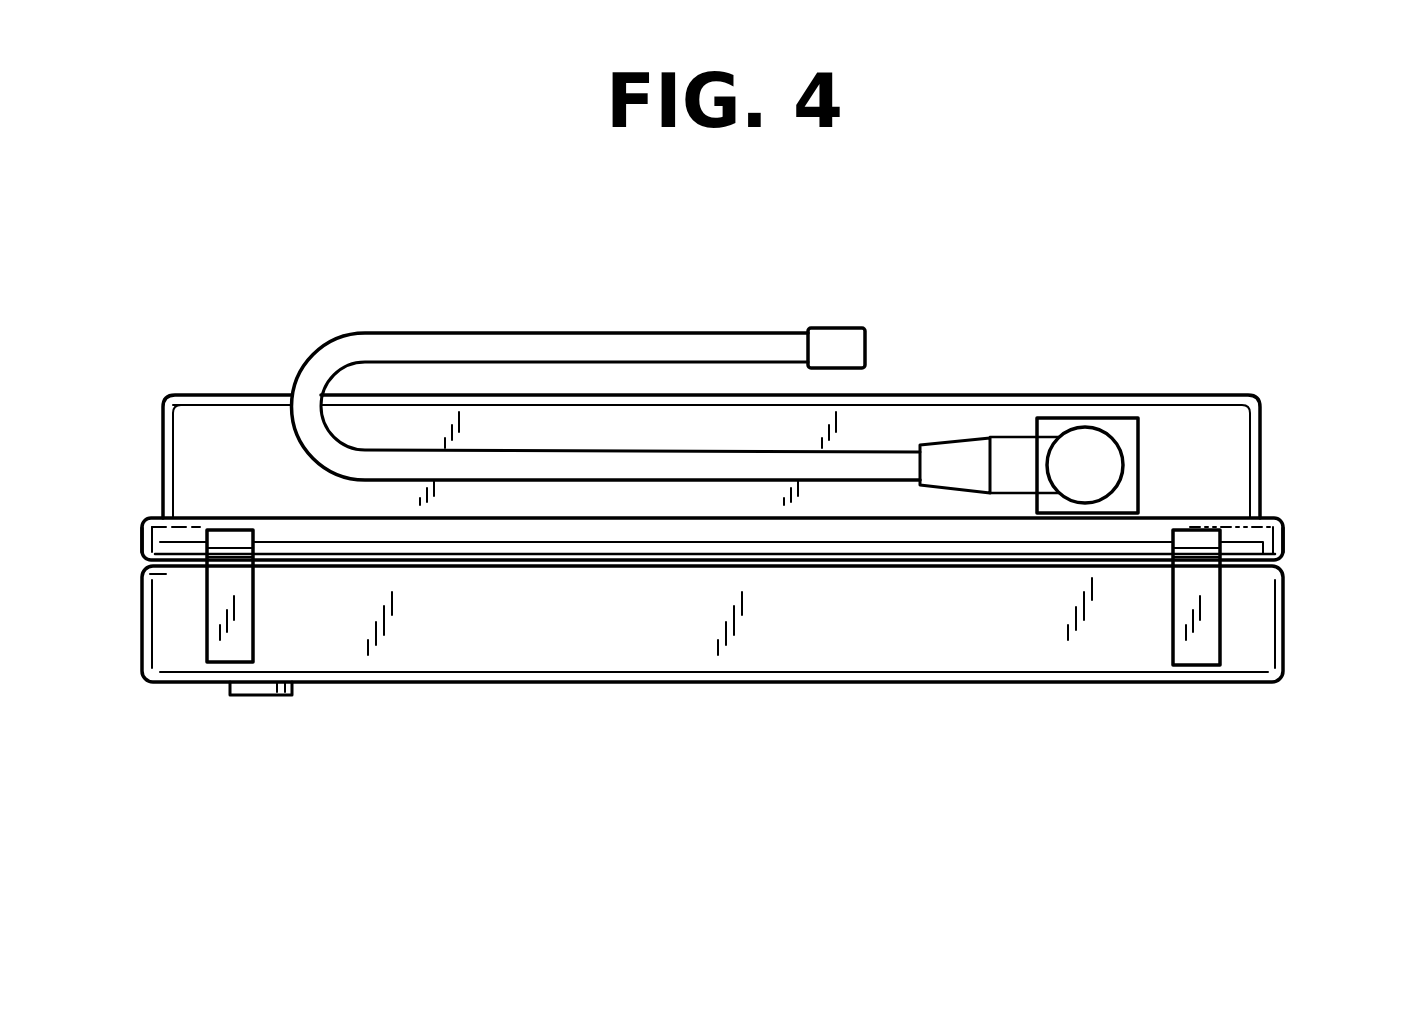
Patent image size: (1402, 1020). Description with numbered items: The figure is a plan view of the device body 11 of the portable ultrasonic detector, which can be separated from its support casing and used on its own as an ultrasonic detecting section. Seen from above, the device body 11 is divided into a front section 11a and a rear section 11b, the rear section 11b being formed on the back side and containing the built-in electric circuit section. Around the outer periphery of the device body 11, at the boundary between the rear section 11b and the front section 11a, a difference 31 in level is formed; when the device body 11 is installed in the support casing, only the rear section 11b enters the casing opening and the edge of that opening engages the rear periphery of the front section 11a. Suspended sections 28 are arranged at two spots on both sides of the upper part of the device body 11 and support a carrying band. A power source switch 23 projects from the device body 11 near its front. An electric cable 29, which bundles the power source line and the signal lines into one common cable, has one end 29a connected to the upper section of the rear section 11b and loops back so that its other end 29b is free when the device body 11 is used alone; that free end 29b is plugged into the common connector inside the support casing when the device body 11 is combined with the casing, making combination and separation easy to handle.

The device body 11 is at (1341, 741).
The front section 11a is at (840, 752).
The rear section 11b is at (1322, 376).
The power source switch 23 is at (265, 697).
The suspended sections 28 is at (213, 627).
The electric cable 29 is at (527, 335).
The one end of electric cable 29a is at (1086, 438).
The another end of electric cable 29b is at (832, 332).
The difference in level 31 is at (157, 518).